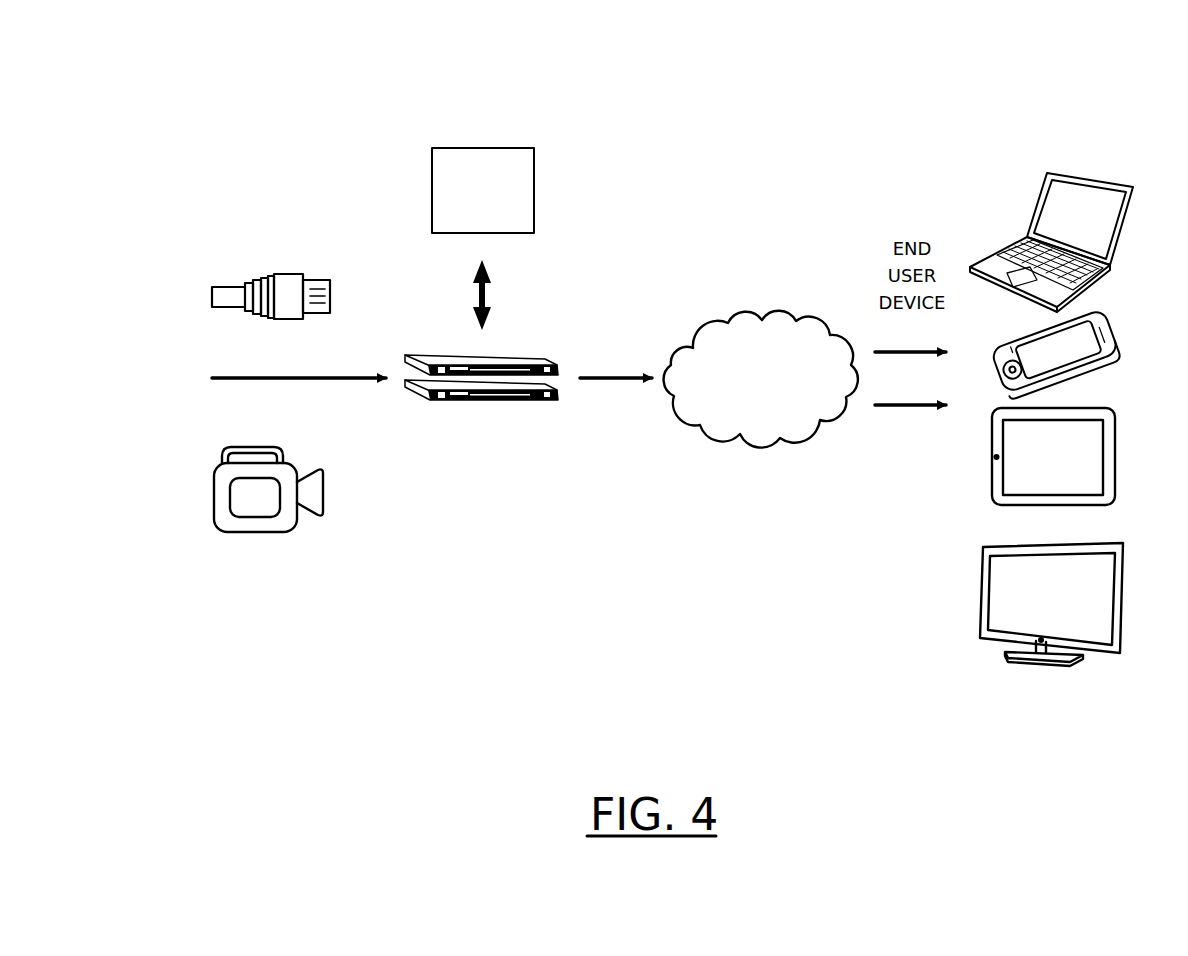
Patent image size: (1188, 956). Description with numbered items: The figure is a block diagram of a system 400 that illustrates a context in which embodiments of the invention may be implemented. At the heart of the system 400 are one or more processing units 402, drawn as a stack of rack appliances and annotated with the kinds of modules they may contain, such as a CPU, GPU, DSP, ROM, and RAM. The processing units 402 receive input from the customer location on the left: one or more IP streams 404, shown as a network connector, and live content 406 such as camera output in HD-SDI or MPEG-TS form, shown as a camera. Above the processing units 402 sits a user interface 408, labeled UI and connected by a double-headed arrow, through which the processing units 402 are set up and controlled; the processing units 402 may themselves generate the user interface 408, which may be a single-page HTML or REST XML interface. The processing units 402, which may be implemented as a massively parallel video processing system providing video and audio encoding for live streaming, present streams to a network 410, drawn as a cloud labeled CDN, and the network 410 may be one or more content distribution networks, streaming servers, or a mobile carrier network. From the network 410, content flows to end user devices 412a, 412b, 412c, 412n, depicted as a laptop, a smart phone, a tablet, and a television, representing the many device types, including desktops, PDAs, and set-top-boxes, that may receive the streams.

The system 400 is at (230, 84).
The processing units 402 is at (528, 353).
The IP streams 404 is at (320, 318).
The live content 406 is at (318, 518).
The user interface 408 is at (515, 148).
The network 410 is at (816, 420).
The end user device 412a is at (1080, 173).
The end user device 412b is at (1075, 322).
The end user device 412c is at (1075, 408).
The end user device 412n is at (1077, 543).